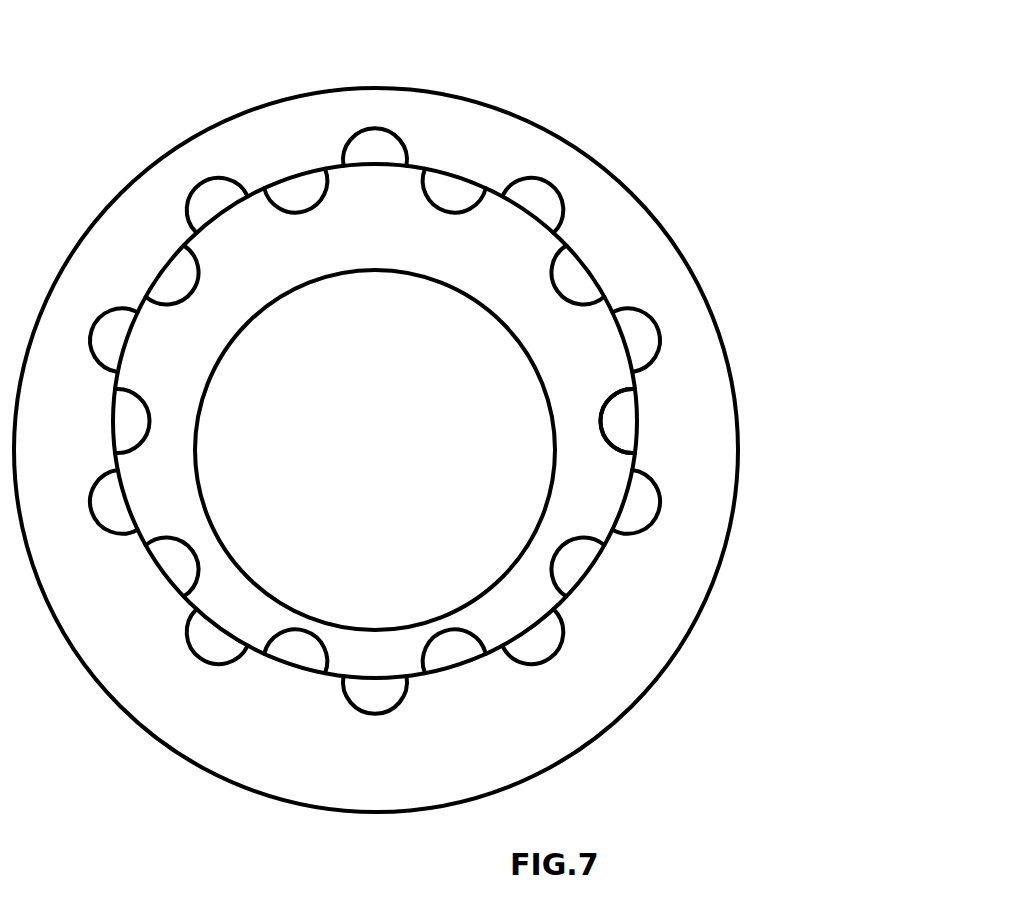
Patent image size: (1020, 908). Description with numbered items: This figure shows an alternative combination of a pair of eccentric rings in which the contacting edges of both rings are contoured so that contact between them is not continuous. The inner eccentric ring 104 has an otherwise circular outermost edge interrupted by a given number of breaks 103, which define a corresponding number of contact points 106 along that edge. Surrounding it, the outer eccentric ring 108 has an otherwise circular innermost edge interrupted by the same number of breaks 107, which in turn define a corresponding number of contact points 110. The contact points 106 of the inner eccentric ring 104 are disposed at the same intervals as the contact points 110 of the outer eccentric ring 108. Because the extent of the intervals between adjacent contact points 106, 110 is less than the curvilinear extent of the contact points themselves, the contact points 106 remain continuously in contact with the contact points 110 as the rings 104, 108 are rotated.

The breaks 103 is at (430, 182).
The inner eccentric ring 104 is at (550, 247).
The contact points 106 is at (522, 203).
The breaks 107 is at (550, 630).
The outer eccentric ring 108 is at (720, 447).
The contact points 110 is at (627, 527).